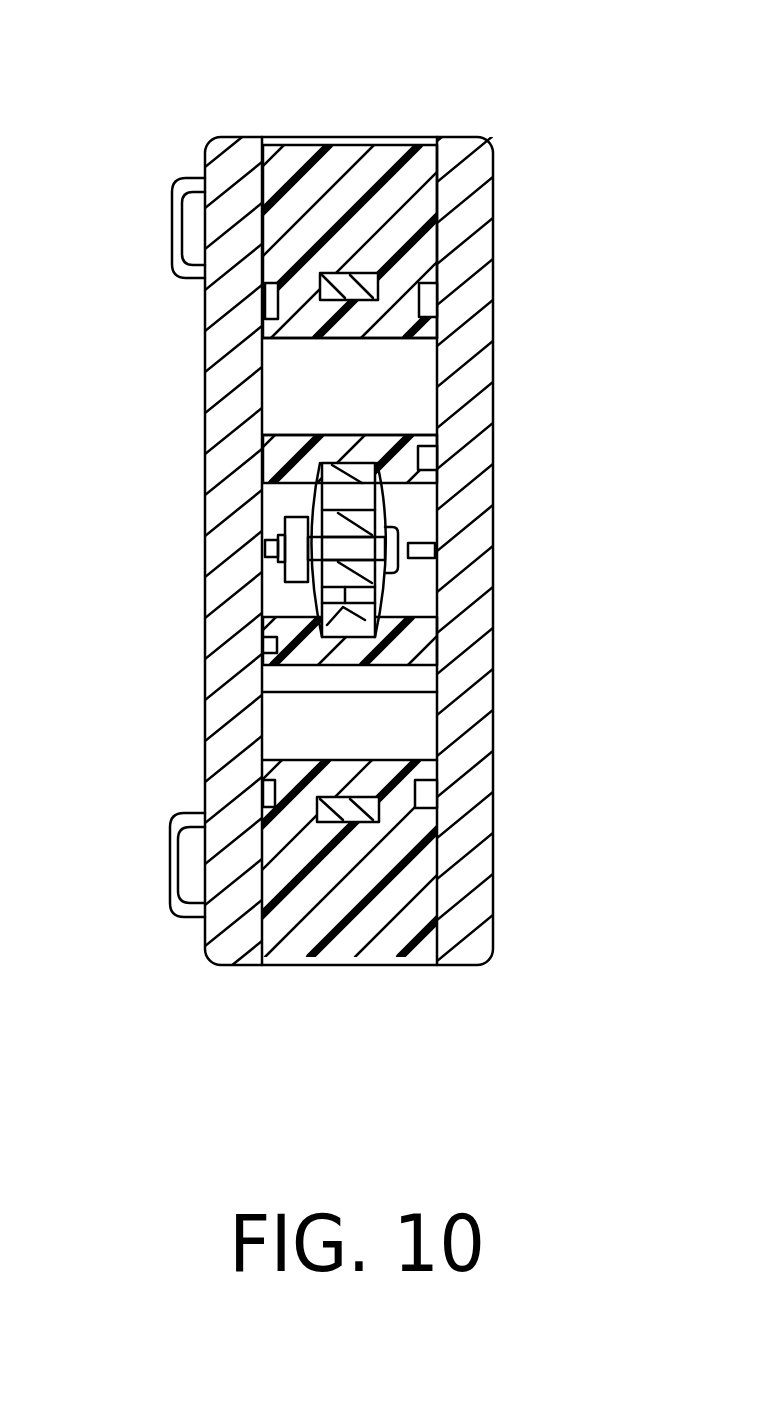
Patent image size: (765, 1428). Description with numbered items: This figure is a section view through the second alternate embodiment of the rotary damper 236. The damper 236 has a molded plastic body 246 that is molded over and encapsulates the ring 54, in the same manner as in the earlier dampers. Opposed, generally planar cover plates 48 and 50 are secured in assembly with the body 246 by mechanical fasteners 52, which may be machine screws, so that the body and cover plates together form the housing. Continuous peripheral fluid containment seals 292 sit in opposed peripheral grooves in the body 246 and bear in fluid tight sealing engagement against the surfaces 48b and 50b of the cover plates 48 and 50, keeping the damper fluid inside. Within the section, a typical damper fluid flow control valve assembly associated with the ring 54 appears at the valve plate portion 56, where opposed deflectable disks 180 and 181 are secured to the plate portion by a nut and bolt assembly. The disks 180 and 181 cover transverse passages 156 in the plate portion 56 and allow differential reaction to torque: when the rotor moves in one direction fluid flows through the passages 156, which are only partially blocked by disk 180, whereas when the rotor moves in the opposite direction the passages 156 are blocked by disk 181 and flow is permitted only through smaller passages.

The rotary damper 236 is at (338, 88).
The body 246 is at (372, 178).
The cover plate 48 is at (479, 165).
The surface 48b is at (437, 363).
The mechanical fasteners 52 is at (173, 237).
The cover plate 50 is at (205, 302).
The deflectable disk 180 is at (318, 500).
The deflectable disk 181 is at (385, 508).
The passages 156 is at (272, 641).
The surface 50b is at (262, 710).
The peripheral fluid containment seals 292 is at (272, 799).
The valve plate portion 56 is at (347, 625).
The ring 54 is at (343, 813).